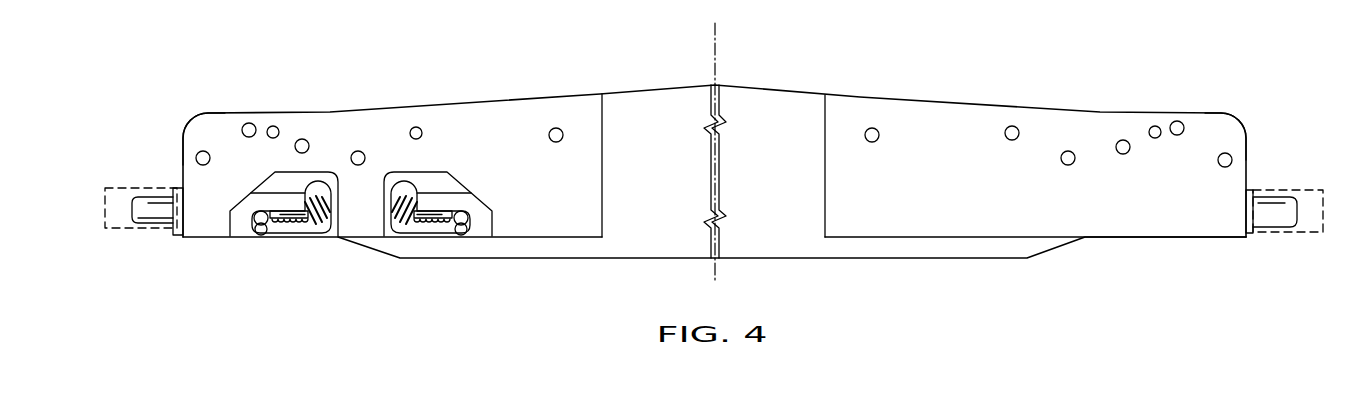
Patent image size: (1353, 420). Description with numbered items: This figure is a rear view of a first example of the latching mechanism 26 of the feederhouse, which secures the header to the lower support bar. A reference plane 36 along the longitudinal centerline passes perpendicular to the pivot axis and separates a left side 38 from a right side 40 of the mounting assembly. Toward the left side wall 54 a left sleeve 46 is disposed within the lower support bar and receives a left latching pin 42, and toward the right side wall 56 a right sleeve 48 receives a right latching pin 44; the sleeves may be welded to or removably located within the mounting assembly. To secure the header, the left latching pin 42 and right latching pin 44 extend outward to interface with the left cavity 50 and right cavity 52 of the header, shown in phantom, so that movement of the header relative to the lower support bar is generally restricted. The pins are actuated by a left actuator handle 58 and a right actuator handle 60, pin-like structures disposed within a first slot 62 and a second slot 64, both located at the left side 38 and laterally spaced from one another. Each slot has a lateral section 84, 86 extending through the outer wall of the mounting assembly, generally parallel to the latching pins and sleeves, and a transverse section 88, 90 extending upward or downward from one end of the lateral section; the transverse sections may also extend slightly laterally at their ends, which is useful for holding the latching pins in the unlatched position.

The latching mechanism 26 is at (148, 160).
The reference plane 36 is at (712, 53).
The left side 38 is at (488, 80).
The right side 40 is at (892, 80).
The left latching pin 42 is at (142, 215).
The right latching pin 44 is at (1278, 210).
The left sleeve 46 is at (178, 232).
The right sleeve 48 is at (1248, 190).
The left cavity 50 is at (115, 186).
The right cavity 52 is at (1318, 190).
The left side wall 54 is at (183, 160).
The right side wall 56 is at (1248, 152).
The left actuator handle 58 is at (258, 232).
The right actuator handle 60 is at (462, 233).
The first slot 62 is at (304, 240).
The second slot 64 is at (418, 240).
The lateral section 84 is at (277, 237).
The lateral section 86 is at (432, 237).
The transverse section 88 is at (328, 226).
The transverse section 90 is at (398, 185).